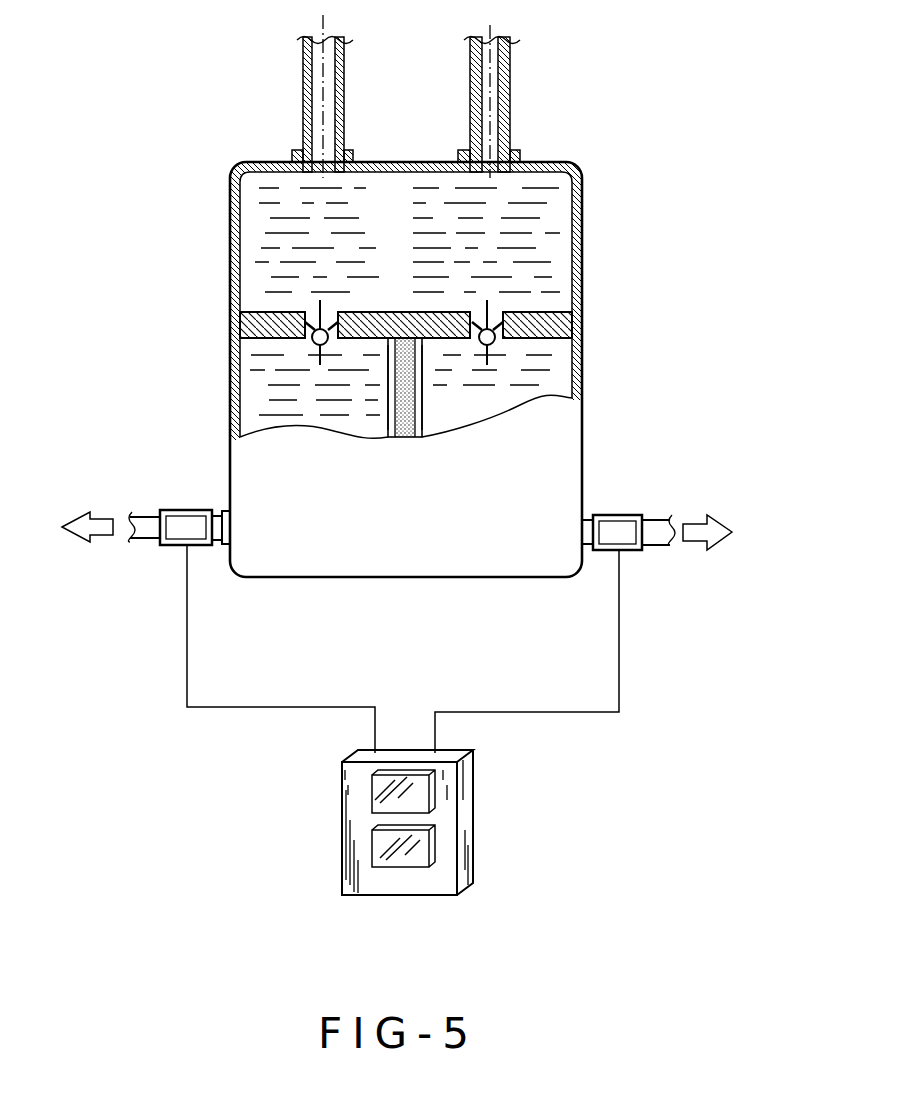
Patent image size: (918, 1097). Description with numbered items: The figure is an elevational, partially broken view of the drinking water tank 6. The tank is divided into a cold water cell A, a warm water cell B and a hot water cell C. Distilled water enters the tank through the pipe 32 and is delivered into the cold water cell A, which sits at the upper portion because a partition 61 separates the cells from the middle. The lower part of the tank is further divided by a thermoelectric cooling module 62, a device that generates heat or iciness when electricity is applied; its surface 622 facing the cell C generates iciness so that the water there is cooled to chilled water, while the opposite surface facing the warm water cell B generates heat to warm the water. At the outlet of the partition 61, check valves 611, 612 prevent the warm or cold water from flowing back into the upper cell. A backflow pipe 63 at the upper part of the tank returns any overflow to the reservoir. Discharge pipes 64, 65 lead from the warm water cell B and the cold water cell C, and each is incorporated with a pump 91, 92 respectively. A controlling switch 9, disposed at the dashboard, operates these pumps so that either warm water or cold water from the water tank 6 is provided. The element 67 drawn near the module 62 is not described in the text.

The water tank 6 is at (560, 425).
The partition 61 is at (395, 320).
The check valve 611 is at (497, 313).
The check valve 612 is at (305, 313).
The thermoelectric cooling module 62 is at (404, 437).
The surface 622 is at (388, 400).
The connecting tube 67 is at (422, 392).
The pipe 32 is at (325, 72).
The backflow pipe 63 is at (495, 85).
The discharge pipe 64 is at (655, 535).
The discharge pipe 65 is at (145, 528).
The pump 91 is at (620, 525).
The pump 92 is at (190, 525).
The controlling switch 9 is at (440, 818).
The cold water cell A is at (548, 262).
The warm water cell B is at (550, 355).
The hot water cell C is at (255, 375).